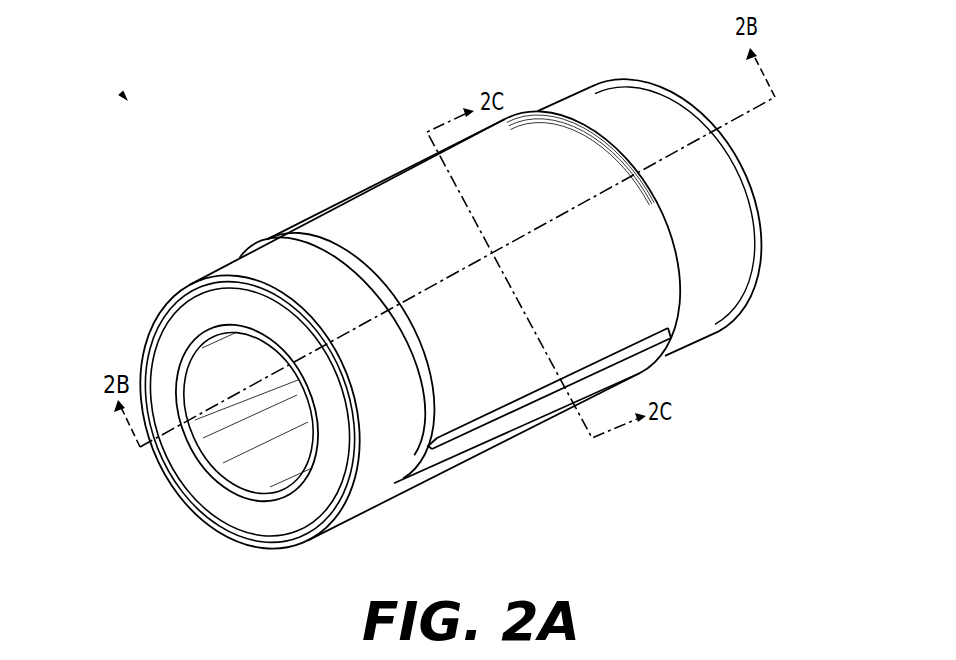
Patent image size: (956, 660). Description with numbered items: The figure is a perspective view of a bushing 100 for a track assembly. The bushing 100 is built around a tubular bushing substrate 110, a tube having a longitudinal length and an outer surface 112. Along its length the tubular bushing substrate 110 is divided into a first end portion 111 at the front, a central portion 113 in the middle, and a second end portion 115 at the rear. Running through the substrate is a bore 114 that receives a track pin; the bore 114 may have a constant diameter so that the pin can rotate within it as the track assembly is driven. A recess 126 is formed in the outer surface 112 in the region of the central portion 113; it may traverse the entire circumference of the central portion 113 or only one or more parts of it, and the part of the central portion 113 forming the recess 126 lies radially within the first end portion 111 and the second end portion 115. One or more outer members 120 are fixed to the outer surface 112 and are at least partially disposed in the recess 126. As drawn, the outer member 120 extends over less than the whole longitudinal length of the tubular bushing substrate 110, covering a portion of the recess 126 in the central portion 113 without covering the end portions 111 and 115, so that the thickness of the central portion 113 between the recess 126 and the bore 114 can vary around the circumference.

The bushing 100 is at (120, 92).
The tubular bushing substrate 110 is at (232, 268).
The first end portion 111 is at (360, 511).
The outer surface 112 is at (541, 172).
The central portion 113 is at (402, 197).
The bore 114 is at (262, 478).
The second end portion 115 is at (683, 155).
The outer member 120 is at (521, 427).
The recess 126 is at (670, 331).